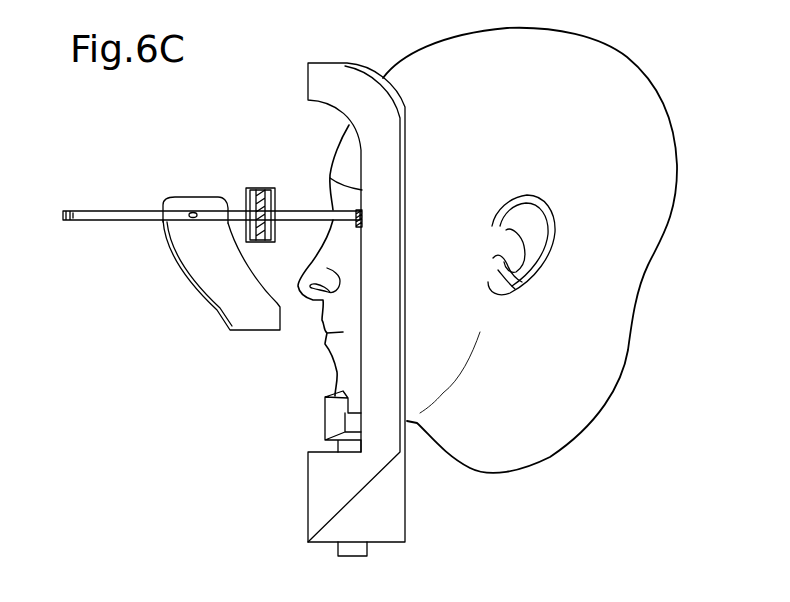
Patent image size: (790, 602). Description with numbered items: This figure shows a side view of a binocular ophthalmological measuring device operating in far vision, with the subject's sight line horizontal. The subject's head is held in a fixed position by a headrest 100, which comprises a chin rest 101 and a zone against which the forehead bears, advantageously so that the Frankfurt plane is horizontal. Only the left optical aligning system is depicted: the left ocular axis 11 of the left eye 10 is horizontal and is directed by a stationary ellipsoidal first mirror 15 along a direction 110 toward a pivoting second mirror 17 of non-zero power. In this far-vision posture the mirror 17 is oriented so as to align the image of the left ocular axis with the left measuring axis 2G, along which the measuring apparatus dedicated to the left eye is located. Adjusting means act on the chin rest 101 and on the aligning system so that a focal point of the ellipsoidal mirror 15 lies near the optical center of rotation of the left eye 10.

The headrest 100 is at (308, 83).
The chin rest 101 is at (325, 412).
The left eye 10 is at (352, 232).
The left ocular axis 11 is at (310, 209).
The left measuring axis 2G is at (120, 210).
The second mirror 17 is at (270, 188).
The direction 110 is at (234, 203).
The ellipsoidal first mirror 15 is at (185, 283).